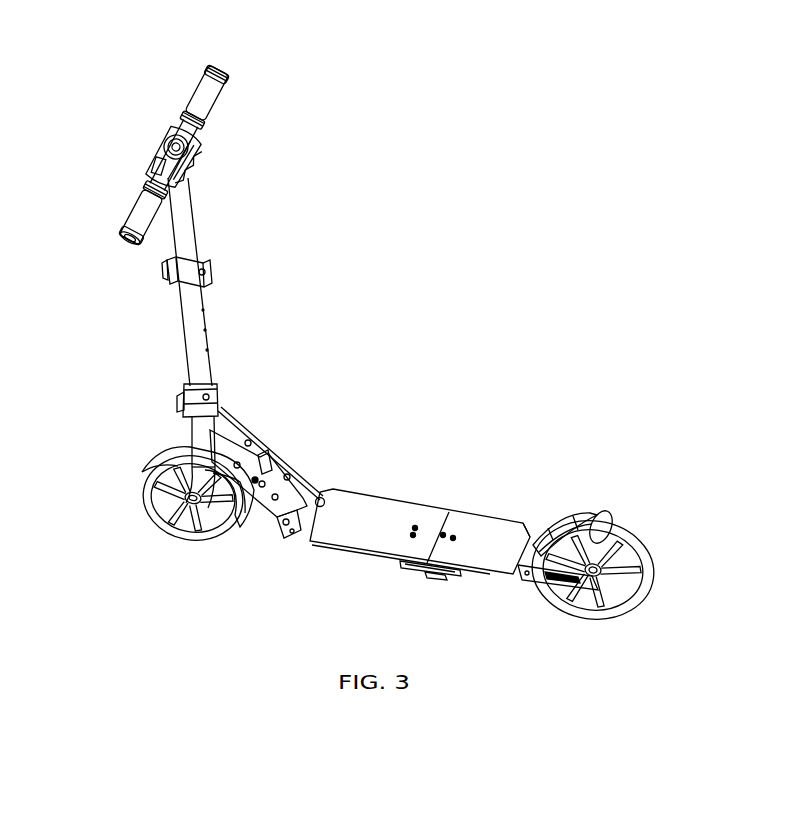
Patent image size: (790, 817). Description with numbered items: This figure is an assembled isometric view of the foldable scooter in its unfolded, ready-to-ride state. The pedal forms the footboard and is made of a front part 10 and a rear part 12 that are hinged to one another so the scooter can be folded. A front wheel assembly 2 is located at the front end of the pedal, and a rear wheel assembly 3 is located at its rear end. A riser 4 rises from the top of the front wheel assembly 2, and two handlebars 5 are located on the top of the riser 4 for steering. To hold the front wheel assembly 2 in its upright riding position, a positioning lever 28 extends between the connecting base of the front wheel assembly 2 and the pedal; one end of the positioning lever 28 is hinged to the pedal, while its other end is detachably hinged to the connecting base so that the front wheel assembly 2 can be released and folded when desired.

The front wheel assembly 2 is at (191, 537).
The rear wheel assembly 3 is at (625, 544).
The riser 4 is at (195, 320).
The handlebars 5 is at (206, 85).
The front part 10 is at (365, 515).
The rear part 12 is at (498, 540).
The positioning lever 28 is at (313, 478).